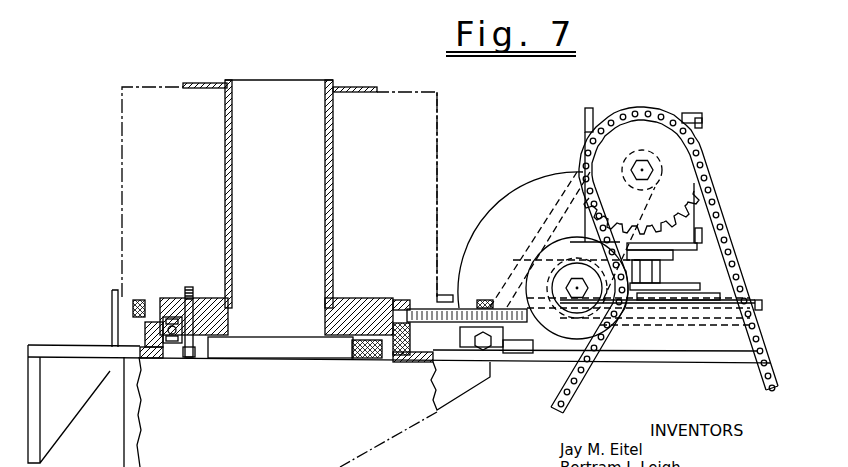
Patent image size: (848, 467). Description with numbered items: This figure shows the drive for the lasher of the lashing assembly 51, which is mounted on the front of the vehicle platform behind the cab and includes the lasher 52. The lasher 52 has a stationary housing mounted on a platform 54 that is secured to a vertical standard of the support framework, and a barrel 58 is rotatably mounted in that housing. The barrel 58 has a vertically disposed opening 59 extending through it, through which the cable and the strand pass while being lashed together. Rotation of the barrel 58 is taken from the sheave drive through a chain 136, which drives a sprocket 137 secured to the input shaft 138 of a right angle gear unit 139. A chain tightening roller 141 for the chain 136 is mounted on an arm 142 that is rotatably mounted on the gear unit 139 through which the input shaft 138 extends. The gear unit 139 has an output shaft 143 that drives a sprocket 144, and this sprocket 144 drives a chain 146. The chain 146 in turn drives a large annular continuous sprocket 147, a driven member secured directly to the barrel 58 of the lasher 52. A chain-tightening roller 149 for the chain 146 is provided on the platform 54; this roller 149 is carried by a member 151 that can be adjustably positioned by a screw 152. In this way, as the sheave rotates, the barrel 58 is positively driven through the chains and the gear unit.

The lashing assembly 51 is at (352, 54).
The lasher 52 is at (442, 152).
The platform 54 is at (53, 348).
The barrel 58 is at (233, 100).
The vertically disposed opening 59 is at (274, 336).
The chain 136 is at (591, 376).
The sprocket 137 is at (650, 150).
The input shaft 138 is at (656, 166).
The right angle gear unit 139 is at (698, 112).
The chain tightening roller 141 is at (577, 340).
The arm 142 is at (513, 266).
The output shaft 143 is at (656, 276).
The sprocket 144 is at (690, 291).
The chain 146 is at (133, 320).
The large annular continuous sprocket 147 is at (157, 300).
The chain-tightening roller 149 is at (468, 319).
The member 151 is at (524, 356).
The screw 152 is at (481, 347).